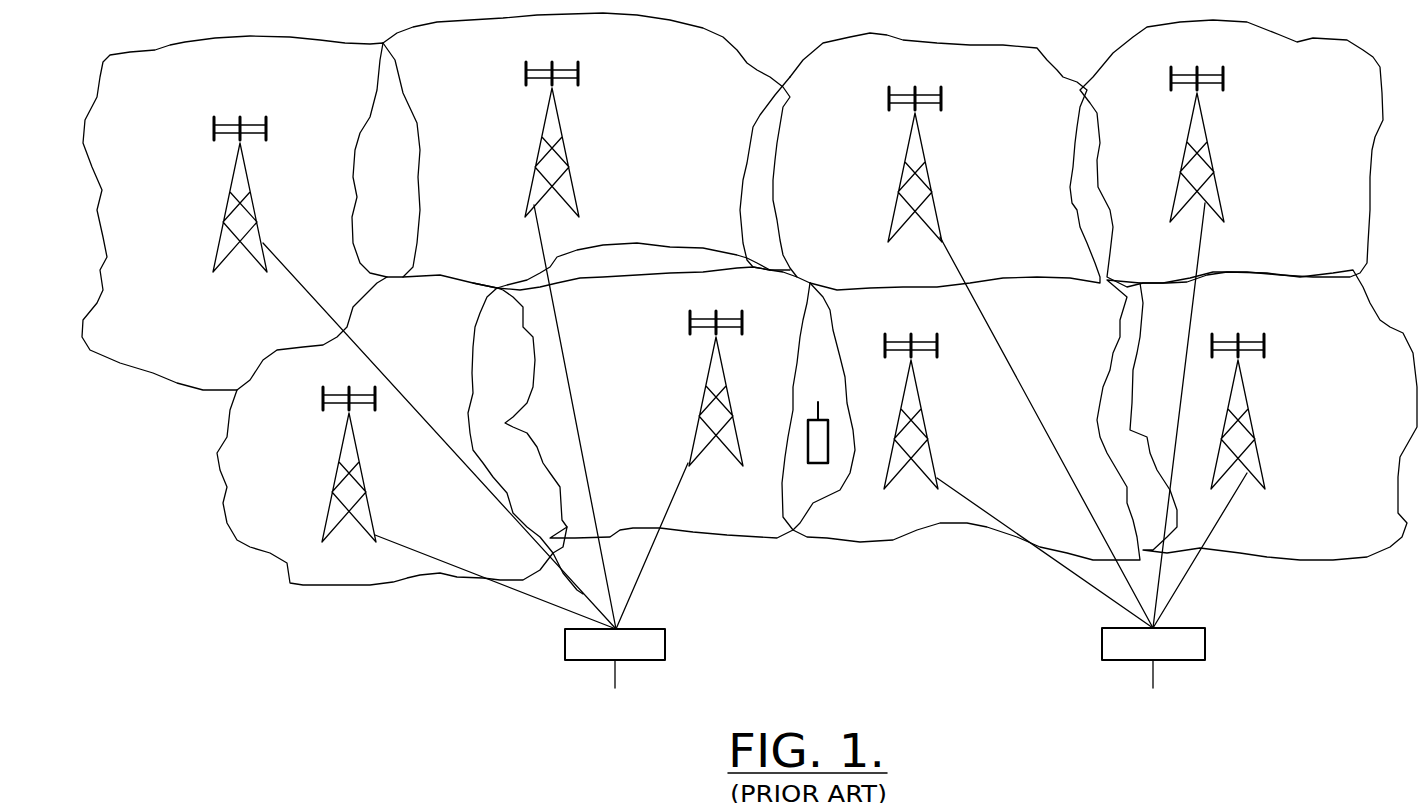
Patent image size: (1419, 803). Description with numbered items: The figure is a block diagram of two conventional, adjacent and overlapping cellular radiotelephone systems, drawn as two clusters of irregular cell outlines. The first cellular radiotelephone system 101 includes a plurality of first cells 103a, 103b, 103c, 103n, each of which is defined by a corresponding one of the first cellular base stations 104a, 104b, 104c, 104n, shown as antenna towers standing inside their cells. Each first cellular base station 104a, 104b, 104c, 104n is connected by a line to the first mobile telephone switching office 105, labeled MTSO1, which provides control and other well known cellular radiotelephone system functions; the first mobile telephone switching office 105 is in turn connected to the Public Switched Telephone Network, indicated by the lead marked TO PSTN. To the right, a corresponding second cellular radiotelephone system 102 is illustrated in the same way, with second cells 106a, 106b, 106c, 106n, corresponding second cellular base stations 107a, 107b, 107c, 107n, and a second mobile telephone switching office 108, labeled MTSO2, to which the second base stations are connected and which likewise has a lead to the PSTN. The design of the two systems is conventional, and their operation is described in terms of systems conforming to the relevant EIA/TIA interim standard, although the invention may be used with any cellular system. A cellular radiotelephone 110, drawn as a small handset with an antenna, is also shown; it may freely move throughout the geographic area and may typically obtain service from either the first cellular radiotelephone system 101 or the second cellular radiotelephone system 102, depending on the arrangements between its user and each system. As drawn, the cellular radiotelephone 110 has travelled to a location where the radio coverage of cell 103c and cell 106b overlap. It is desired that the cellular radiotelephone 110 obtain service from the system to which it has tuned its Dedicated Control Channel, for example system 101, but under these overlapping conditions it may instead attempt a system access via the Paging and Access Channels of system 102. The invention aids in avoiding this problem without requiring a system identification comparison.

The first cellular radiotelephone system 101 is at (458, 627).
The second cellular radiotelephone system 102 is at (993, 626).
The first cell 103a is at (161, 143).
The first cell 103b is at (311, 458).
The first cell 103c is at (632, 310).
The first cell 103n is at (711, 162).
The first cellular base station 104a is at (219, 237).
The first cellular base station 104b is at (367, 503).
The first cellular base station 104c is at (697, 428).
The first cellular base station 104n is at (533, 178).
The first mobile telephone switching office 105 is at (563, 640).
The second cell 106a is at (1061, 125).
The second cell 106b is at (1093, 363).
The second cell 106c is at (1380, 376).
The second cell 106n is at (1351, 98).
The second cellular base station 107a is at (935, 207).
The second cellular base station 107b is at (932, 452).
The second cellular base station 107c is at (1257, 450).
The second cellular base station 107n is at (1217, 187).
The second mobile telephone switching office 108 is at (1102, 638).
The cellular radiotelephone 110 is at (808, 455).